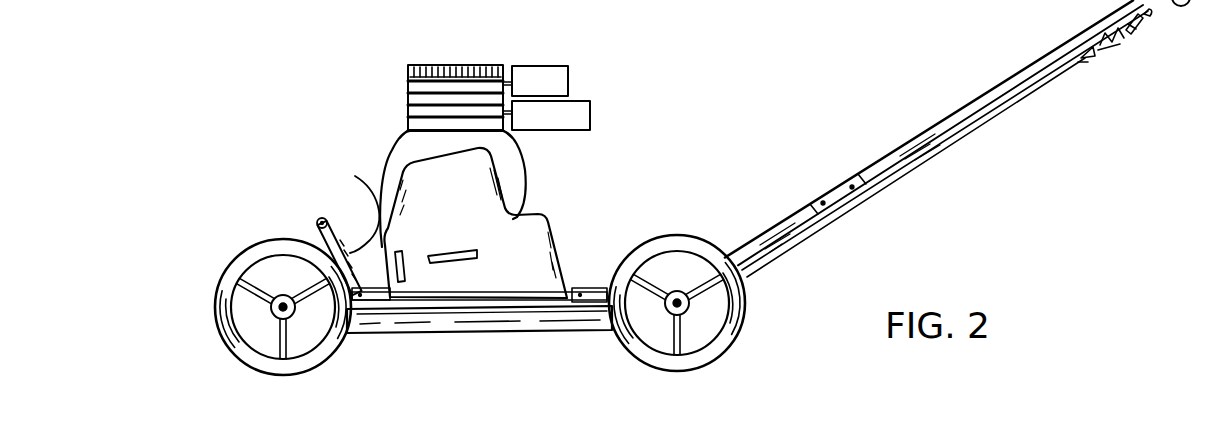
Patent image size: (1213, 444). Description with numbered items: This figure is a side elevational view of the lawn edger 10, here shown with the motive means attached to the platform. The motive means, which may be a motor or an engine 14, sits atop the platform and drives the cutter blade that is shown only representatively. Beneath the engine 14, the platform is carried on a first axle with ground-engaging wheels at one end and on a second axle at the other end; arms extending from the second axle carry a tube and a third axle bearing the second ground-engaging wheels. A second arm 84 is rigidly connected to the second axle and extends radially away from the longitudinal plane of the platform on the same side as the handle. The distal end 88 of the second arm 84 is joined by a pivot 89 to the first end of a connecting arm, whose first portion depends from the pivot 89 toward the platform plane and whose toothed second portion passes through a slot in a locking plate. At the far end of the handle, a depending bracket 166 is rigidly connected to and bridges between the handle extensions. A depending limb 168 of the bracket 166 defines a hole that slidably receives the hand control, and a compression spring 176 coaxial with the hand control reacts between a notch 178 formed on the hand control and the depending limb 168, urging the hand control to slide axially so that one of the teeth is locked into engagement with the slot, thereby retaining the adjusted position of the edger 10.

The lawn edger 10 is at (587, 248).
The engine 14 is at (396, 160).
The second arm 84 is at (340, 245).
The distal end 88 is at (351, 221).
The pivot 89 is at (317, 222).
The depending bracket 166 is at (1107, 30).
The depending limb 168 is at (1146, 22).
The compression spring 176 is at (1122, 44).
The notch 178 is at (1083, 56).